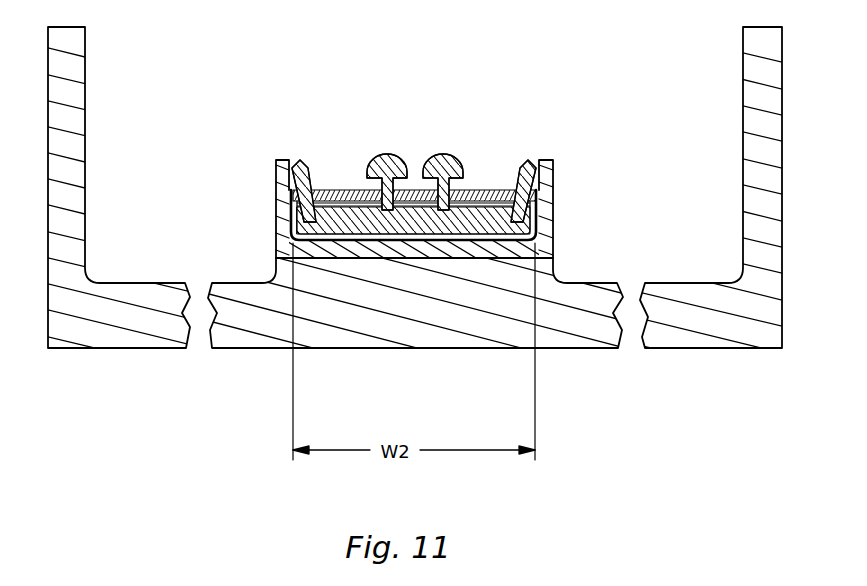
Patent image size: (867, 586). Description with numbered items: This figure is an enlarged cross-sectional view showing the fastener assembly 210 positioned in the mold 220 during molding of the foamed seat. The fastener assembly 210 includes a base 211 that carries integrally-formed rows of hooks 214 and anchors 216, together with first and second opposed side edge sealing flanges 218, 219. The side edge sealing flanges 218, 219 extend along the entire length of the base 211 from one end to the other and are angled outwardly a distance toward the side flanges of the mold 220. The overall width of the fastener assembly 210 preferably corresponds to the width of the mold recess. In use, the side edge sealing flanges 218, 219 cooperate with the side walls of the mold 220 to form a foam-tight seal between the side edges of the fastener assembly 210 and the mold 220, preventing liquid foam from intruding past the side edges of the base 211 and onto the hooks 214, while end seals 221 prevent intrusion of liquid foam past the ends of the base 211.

The fastener assembly 210 is at (282, 97).
The base 211 is at (483, 188).
The hooks 214 is at (536, 217).
The anchors 216 is at (388, 157).
The first side edge sealing flange 218 is at (313, 166).
The second side edge sealing flange 219 is at (521, 163).
The mold 220 is at (276, 197).
The end seals 221 is at (488, 228).